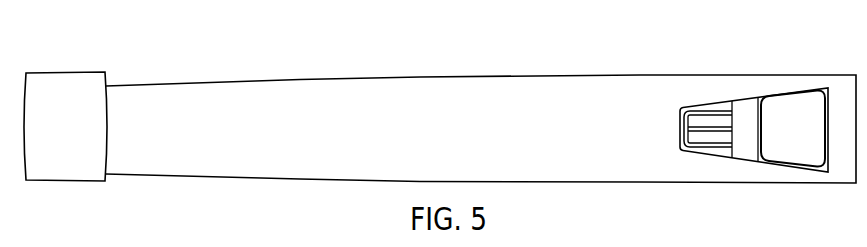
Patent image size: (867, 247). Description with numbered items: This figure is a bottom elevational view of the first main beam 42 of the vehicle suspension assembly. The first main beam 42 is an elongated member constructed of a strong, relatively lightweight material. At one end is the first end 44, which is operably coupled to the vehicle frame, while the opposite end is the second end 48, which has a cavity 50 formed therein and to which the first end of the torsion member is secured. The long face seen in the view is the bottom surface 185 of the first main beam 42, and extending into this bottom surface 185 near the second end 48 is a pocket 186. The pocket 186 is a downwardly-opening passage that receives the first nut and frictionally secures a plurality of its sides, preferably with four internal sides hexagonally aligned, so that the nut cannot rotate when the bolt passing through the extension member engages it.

The first end 44 is at (50, 78).
The first main beam 42 is at (440, 92).
The bottom surface 185 is at (565, 125).
The second end 48 is at (737, 173).
The pocket 186 is at (702, 127).
The cavity 50 is at (812, 103).